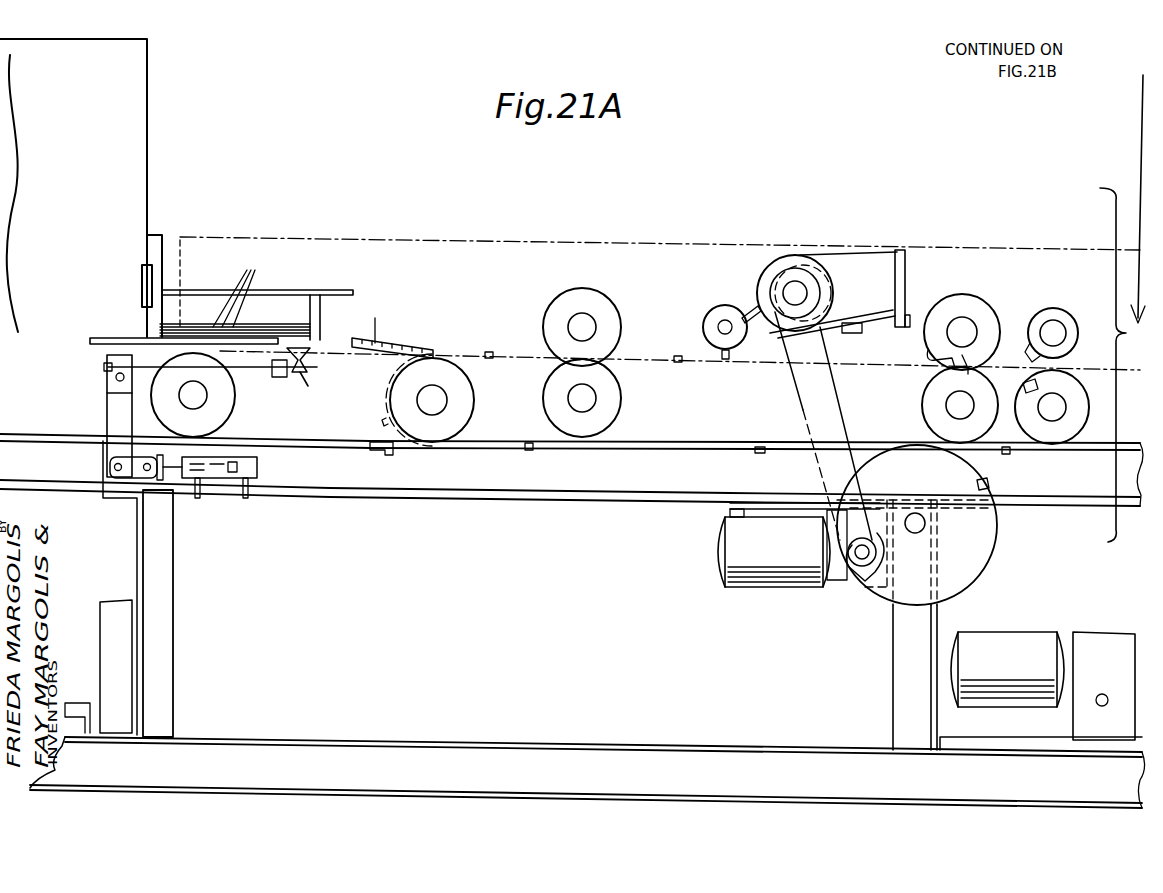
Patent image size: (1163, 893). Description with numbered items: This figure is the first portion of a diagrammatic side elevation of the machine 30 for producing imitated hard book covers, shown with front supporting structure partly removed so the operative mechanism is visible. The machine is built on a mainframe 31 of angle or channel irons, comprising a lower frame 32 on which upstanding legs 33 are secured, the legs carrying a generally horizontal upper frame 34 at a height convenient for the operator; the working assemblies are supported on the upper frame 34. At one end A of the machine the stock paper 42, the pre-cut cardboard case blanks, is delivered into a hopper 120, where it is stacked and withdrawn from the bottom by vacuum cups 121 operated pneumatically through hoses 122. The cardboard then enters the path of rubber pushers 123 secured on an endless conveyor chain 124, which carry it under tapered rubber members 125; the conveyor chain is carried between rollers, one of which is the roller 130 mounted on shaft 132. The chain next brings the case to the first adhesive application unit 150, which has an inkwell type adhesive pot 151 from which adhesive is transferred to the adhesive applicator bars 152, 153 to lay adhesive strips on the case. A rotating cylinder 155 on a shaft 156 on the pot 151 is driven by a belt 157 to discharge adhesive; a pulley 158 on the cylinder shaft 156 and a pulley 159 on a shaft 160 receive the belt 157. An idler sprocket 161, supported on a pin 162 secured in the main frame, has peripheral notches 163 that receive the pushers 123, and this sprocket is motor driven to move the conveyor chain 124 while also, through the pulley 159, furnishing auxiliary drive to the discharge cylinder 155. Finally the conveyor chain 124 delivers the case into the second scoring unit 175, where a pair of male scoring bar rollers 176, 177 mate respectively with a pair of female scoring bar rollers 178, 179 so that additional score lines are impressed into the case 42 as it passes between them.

The end of the machine A is at (161, 88).
The machine 30 is at (835, 147).
The mainframe 31 is at (401, 741).
The lower frame 32 is at (288, 755).
The upstanding legs 33 is at (176, 582).
The upper frame 34 is at (411, 480).
The stock paper 42 is at (235, 294).
The hopper 120 is at (294, 288).
The vacuum cups 121 is at (320, 355).
The hoses 122 is at (309, 386).
The rubber pushers 123 is at (489, 352).
The endless conveyor chain 124 is at (540, 362).
The tapered rubber members 125 is at (403, 345).
The roller 130 is at (226, 393).
The shaft 132 is at (201, 400).
The first adhesive application unit 150 is at (884, 204).
The adhesive pot 151 is at (868, 270).
The adhesive applicator bar 152 is at (760, 325).
The adhesive applicator bar 153 is at (725, 361).
The rotating cylinder 155 is at (758, 277).
The cylinder shaft 156 is at (793, 290).
The belt 157 is at (846, 383).
The pulley 158 is at (797, 268).
The pulley 159 is at (867, 578).
The shaft 160 is at (871, 552).
The idler sprocket 161 is at (997, 531).
The pin 162 is at (915, 513).
The peripheral notches 163 is at (997, 489).
The second scoring unit 175 is at (1008, 243).
The male scoring bar roller 176 is at (977, 297).
The male scoring bar roller 177 is at (1057, 310).
The female scoring bar roller 178 is at (932, 415).
The female scoring bar roller 179 is at (1047, 433).